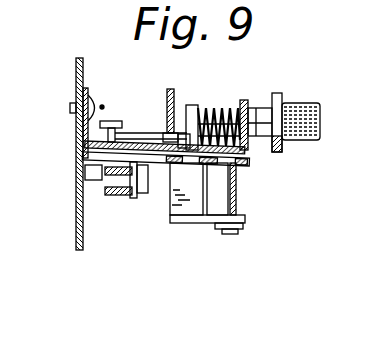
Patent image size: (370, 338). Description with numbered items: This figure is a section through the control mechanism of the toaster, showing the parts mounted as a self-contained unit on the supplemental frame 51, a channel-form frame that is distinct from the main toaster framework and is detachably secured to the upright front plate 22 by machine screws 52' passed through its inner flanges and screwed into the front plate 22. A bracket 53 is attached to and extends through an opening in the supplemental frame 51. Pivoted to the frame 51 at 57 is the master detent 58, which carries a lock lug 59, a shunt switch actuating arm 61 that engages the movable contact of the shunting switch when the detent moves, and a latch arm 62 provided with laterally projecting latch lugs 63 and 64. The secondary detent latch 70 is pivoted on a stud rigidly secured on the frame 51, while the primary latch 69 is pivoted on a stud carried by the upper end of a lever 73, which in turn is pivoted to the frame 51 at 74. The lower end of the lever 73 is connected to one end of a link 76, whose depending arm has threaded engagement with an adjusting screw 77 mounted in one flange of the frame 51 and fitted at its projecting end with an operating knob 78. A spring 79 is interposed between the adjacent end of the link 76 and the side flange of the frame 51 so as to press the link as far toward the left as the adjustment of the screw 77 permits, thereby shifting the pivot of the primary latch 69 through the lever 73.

The front plate 22 is at (76, 73).
The supplemental frame 51 is at (188, 120).
The machine screws 52' is at (58, 124).
The bracket 53 is at (176, 90).
The pivot 57 is at (235, 200).
The master detent 58 is at (248, 160).
The lock lug 59 is at (232, 233).
The shunt switch actuating arm 61 is at (186, 168).
The latch arm 62 is at (82, 160).
The latch lug 63 is at (93, 181).
The latch lug 64 is at (160, 206).
The primary latch 69 is at (148, 175).
The secondary detent latch 70 is at (120, 197).
The lever 73 is at (121, 125).
The pivot 74 is at (102, 106).
The link 76 is at (147, 134).
The adjusting screw 77 is at (244, 110).
The operating knob 78 is at (303, 108).
The spring 79 is at (215, 110).